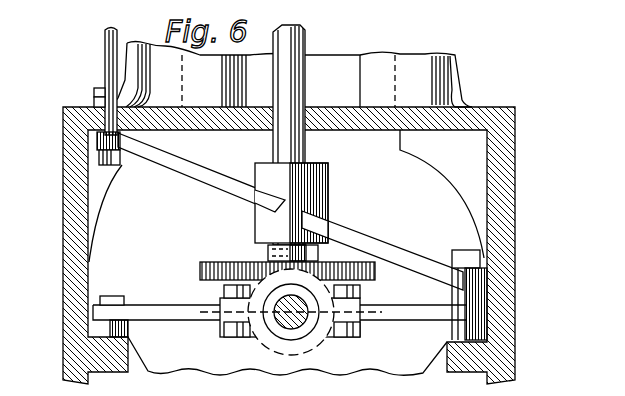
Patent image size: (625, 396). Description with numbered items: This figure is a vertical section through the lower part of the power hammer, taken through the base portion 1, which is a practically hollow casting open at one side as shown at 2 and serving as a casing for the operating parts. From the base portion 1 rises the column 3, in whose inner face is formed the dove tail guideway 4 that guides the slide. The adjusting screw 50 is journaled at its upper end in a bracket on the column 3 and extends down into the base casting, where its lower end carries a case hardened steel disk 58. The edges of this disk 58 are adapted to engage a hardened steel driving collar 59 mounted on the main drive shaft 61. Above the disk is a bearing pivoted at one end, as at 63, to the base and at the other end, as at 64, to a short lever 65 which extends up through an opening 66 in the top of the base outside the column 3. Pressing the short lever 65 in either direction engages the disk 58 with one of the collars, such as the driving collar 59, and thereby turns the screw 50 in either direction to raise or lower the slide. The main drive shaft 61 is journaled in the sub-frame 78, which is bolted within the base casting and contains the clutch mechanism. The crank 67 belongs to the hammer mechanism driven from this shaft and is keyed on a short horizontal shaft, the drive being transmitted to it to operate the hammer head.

The base portion 1 is at (503, 360).
The open side of the base 2 is at (286, 196).
The column 3 is at (421, 81).
The dove tail guideway 4 is at (288, 75).
The adjusting screw 50 is at (305, 148).
The case hardened steel disk 58 is at (375, 278).
The driving collar 59 is at (320, 347).
The main drive shaft 61 is at (292, 318).
The pivot of bearing to base 63 is at (463, 278).
The pivot of bearing to lever 64 is at (100, 147).
The short lever 65 is at (105, 50).
The opening in the top of the base 66 is at (84, 102).
The crank 67 is at (328, 188).
The sub-frame 78 is at (423, 312).